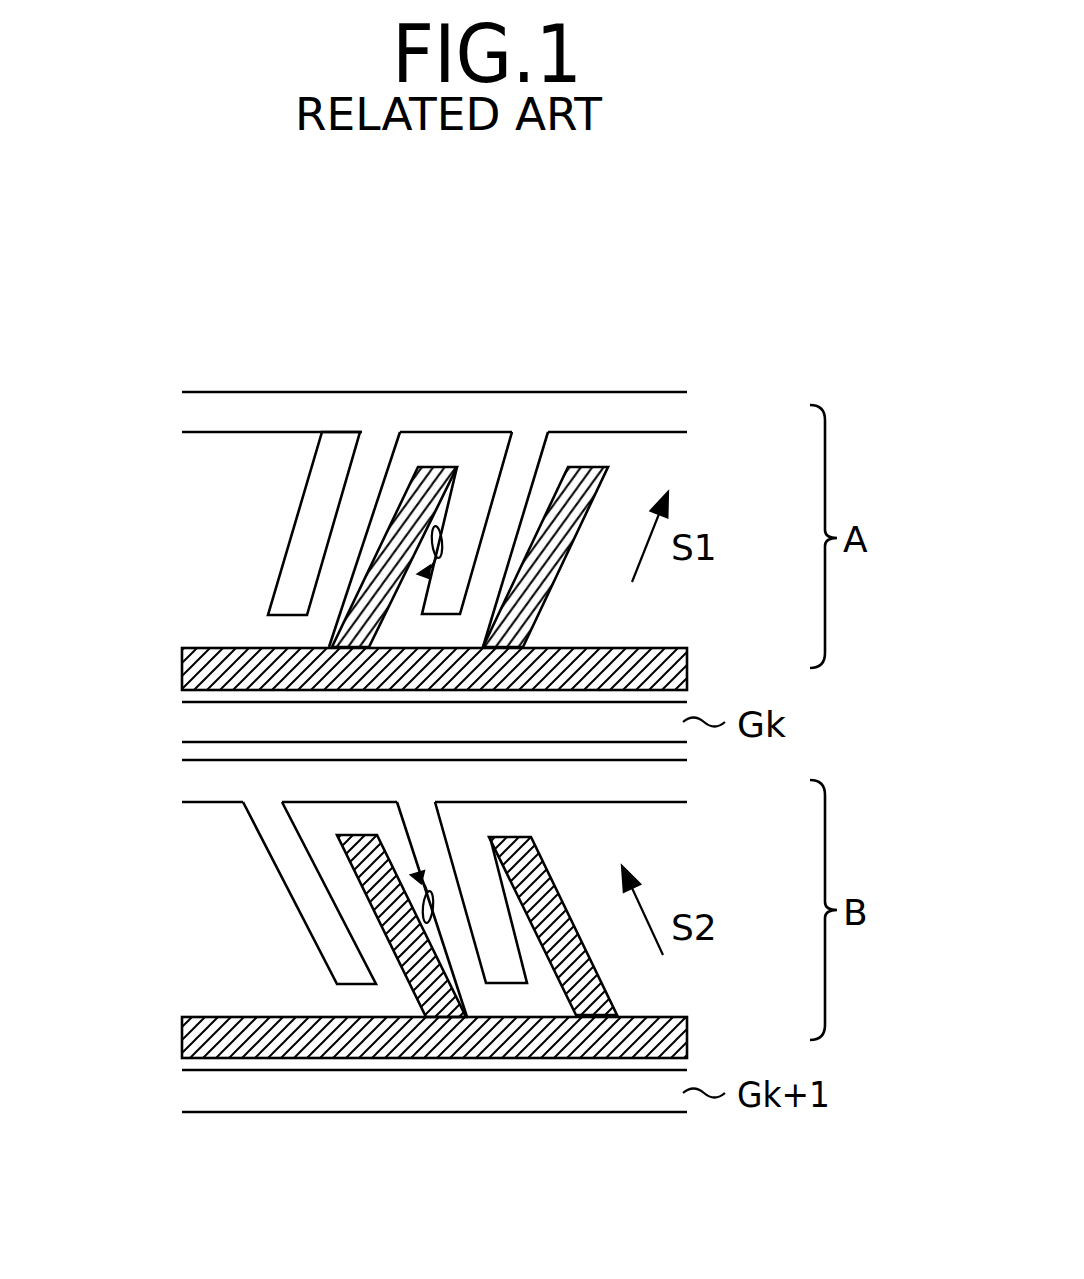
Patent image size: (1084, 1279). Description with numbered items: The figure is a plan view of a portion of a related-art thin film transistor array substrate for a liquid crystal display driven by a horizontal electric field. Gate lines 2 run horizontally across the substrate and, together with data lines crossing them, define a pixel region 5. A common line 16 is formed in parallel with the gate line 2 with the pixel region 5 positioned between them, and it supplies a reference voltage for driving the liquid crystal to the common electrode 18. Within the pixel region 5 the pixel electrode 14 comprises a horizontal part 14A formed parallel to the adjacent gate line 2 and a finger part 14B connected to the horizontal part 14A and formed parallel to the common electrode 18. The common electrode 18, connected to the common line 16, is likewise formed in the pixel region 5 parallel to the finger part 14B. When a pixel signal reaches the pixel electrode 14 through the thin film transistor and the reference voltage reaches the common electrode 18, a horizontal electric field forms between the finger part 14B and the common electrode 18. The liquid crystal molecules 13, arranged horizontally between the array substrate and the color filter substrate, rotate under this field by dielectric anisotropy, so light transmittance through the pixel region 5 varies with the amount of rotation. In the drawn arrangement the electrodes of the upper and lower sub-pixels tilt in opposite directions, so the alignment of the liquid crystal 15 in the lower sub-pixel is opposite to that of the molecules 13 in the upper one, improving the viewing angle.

The gate line 2 is at (923, 722).
The pixel region 5 is at (353, 553).
The liquid crystal molecules 13 is at (437, 526).
The pixel electrode 14 is at (722, 302).
The horizontal part 14A is at (557, 647).
The finger part 14B is at (588, 467).
The liquid crystal 15 is at (430, 924).
The common line 16 is at (490, 397).
The common electrode 18 is at (344, 478).